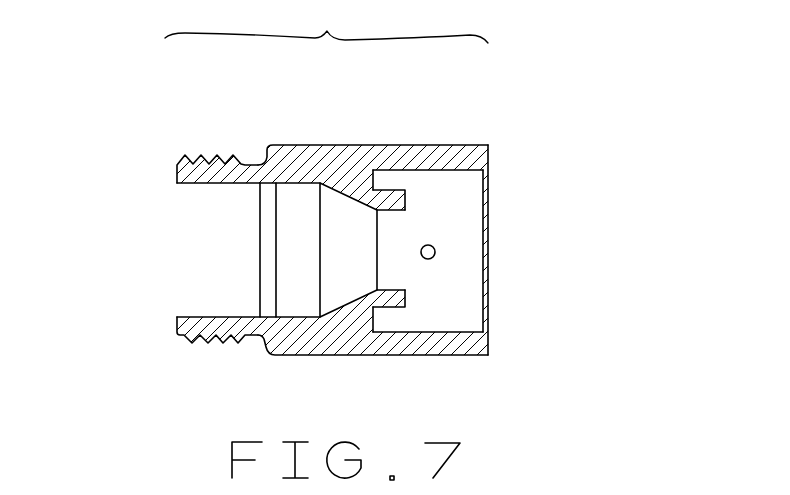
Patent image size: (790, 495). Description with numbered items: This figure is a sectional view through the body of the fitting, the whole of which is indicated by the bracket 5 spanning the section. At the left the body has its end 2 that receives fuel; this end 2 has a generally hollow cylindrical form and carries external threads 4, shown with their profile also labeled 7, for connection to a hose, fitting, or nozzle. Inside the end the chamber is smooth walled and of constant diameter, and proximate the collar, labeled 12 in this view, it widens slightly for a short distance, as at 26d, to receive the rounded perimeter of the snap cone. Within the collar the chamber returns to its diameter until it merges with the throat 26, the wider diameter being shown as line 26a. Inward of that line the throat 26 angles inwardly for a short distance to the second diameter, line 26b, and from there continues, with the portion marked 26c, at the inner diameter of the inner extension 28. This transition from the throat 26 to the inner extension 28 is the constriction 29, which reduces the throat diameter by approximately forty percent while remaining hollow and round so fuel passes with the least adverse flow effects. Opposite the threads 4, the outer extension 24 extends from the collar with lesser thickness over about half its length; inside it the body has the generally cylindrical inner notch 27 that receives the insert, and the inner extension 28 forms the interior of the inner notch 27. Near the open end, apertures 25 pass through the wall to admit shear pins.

The end 2 is at (175, 200).
The threads 4 is at (198, 158).
The fitting assembly 5 is at (326, 24).
The external thread 7 is at (257, 158).
The flange 12 is at (282, 145).
The outer extension 24 is at (407, 145).
The apertures 25 is at (436, 250).
The throat 26 is at (320, 256).
The line of wider chamber diameter 26a is at (303, 207).
The line of second wider diameter 26b is at (368, 240).
The neck section 26c is at (393, 276).
The widened chamber portion 26d is at (263, 295).
The inner notch 27 is at (215, 233).
The inner extension 28 is at (405, 198).
The constriction 29 is at (345, 298).